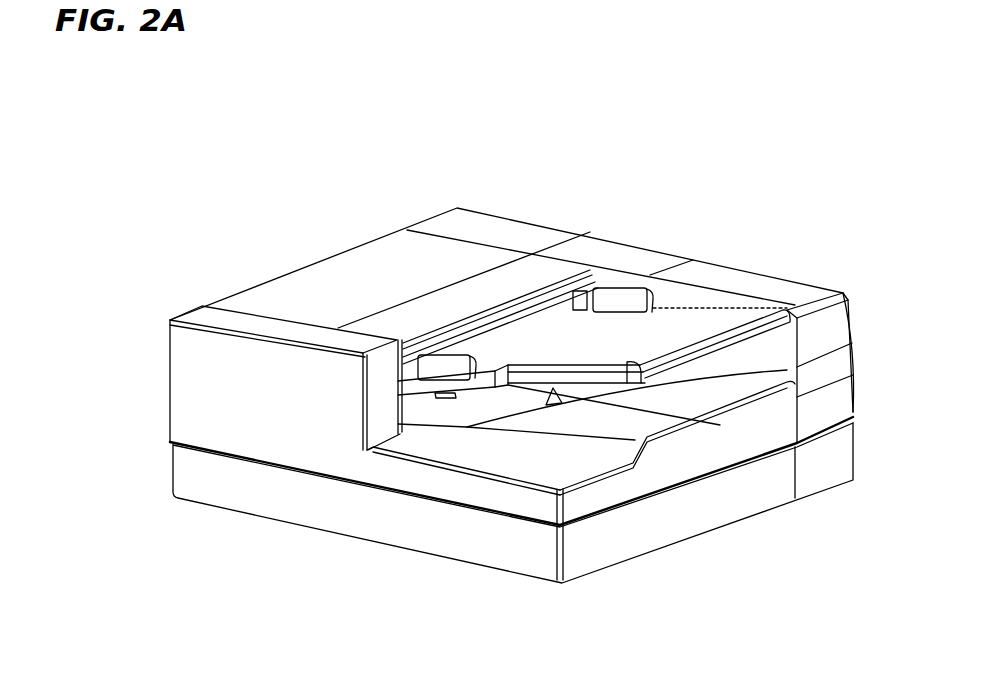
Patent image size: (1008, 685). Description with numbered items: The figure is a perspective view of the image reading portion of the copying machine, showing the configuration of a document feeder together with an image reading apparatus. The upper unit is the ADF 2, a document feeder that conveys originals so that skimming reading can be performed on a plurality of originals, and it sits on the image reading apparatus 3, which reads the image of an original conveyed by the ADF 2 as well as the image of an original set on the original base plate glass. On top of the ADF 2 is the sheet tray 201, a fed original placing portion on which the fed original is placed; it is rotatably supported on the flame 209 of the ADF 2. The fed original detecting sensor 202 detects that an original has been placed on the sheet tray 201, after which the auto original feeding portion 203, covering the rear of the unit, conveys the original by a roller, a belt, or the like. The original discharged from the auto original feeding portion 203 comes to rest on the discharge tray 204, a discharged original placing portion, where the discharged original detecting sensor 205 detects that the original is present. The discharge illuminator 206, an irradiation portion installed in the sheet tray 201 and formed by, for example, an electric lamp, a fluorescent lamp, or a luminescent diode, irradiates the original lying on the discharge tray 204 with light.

The ADF 2 is at (679, 197).
The image reading apparatus 3 is at (675, 561).
The sheet tray 201 is at (693, 325).
The fed original detecting sensor 202 is at (511, 345).
The auto original feeding portion 203 is at (380, 277).
The discharge tray 204 is at (640, 388).
The discharged original detecting sensor 205 is at (553, 407).
The discharge illuminator 206 is at (448, 400).
The flame 209 is at (253, 352).